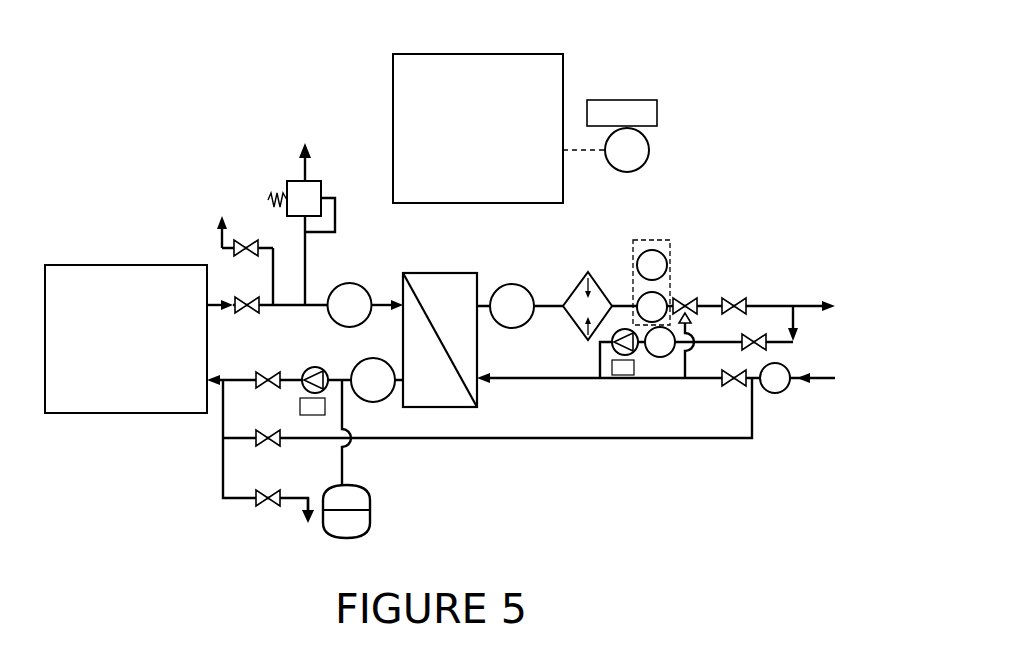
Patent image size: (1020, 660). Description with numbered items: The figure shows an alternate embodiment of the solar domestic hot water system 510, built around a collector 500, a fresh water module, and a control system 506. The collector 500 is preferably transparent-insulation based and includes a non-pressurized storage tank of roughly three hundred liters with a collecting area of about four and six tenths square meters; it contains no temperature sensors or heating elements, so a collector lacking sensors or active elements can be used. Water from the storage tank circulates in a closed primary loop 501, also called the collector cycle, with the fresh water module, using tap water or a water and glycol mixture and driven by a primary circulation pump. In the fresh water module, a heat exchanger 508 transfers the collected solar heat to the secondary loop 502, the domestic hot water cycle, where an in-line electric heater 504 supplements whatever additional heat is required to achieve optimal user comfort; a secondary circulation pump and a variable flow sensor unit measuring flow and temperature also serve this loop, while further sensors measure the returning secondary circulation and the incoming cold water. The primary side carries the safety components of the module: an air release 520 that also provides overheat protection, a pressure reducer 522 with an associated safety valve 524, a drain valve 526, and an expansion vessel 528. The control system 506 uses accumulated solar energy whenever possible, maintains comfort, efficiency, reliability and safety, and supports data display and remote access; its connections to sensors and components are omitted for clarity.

The solar hot water system 510 is at (136, 123).
The collector 500 is at (126, 339).
The primary loop 501 is at (479, 364).
The secondary loop 502 is at (675, 307).
The in-line electric heater 504 is at (587, 279).
The control system 506 is at (478, 128).
The heat exchanger 508 is at (440, 340).
The air release 520 is at (241, 221).
The pressure reducer 522 is at (305, 150).
The safety valve 524 is at (320, 206).
The drain valve 526 is at (305, 524).
The expansion vessel 528 is at (346, 526).